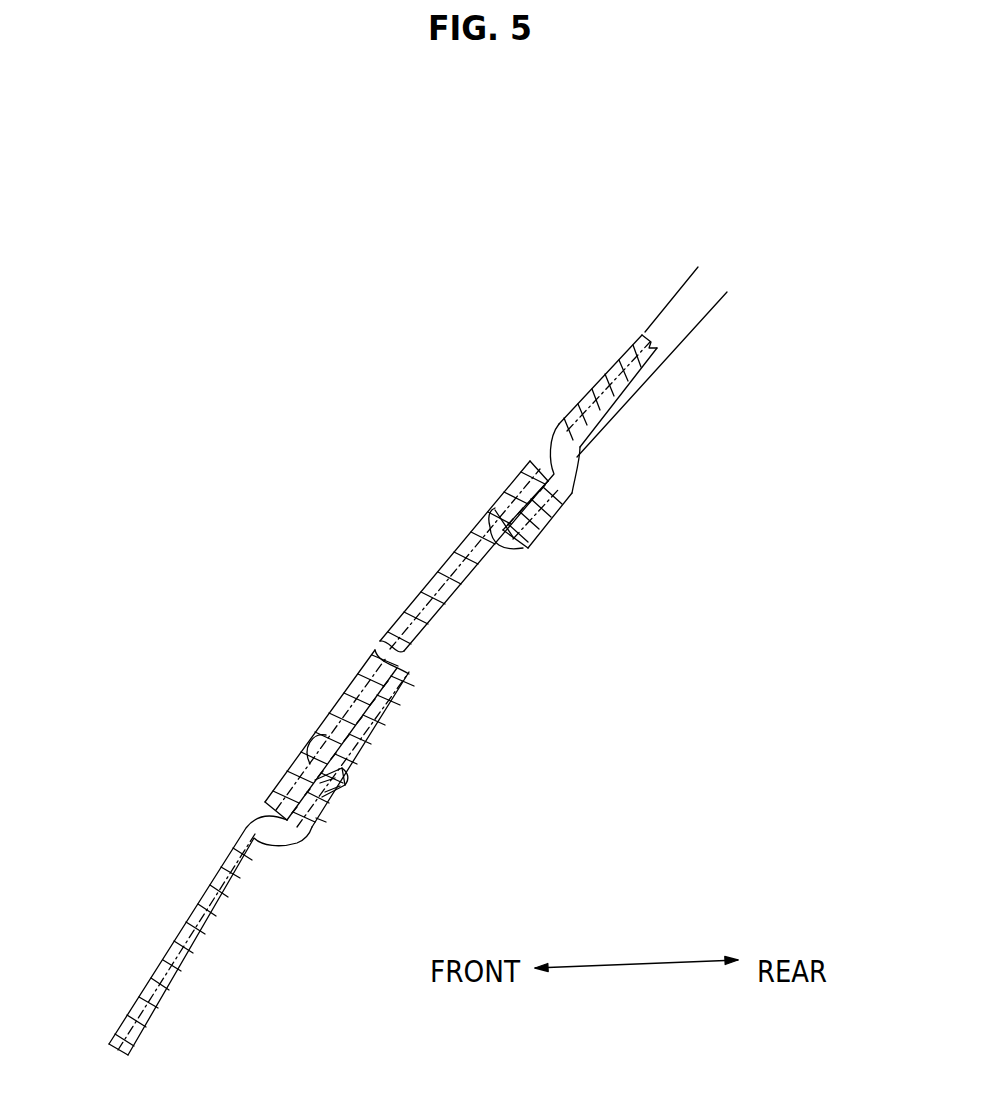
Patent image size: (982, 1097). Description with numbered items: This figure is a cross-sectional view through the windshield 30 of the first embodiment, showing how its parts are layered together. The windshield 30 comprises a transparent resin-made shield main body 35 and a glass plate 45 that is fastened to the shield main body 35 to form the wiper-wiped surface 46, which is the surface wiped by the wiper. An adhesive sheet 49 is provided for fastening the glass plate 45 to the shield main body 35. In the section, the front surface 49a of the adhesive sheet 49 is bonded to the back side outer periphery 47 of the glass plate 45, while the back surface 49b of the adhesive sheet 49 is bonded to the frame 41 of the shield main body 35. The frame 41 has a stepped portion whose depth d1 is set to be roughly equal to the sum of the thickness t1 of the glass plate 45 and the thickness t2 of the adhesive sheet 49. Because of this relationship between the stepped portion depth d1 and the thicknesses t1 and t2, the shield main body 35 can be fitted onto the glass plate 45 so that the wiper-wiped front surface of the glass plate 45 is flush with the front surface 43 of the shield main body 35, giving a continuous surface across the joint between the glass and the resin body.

The windshield 30 is at (178, 447).
The shield main body 35 is at (589, 383).
The front surface 43 is at (619, 360).
The stepped portion depth d1 is at (652, 245).
The frame 41 is at (523, 470).
The back side outer periphery 47 is at (475, 525).
The glass plate 45 is at (438, 562).
The thickness of the glass plate t1 is at (460, 662).
The thickness of the adhesive sheet t2 is at (422, 728).
The wiper-wiped surface 46 is at (306, 762).
The adhesive sheet 49 is at (315, 787).
The front surface of the adhesive sheet 49a is at (312, 741).
The back surface of the adhesive sheet 49b is at (315, 820).